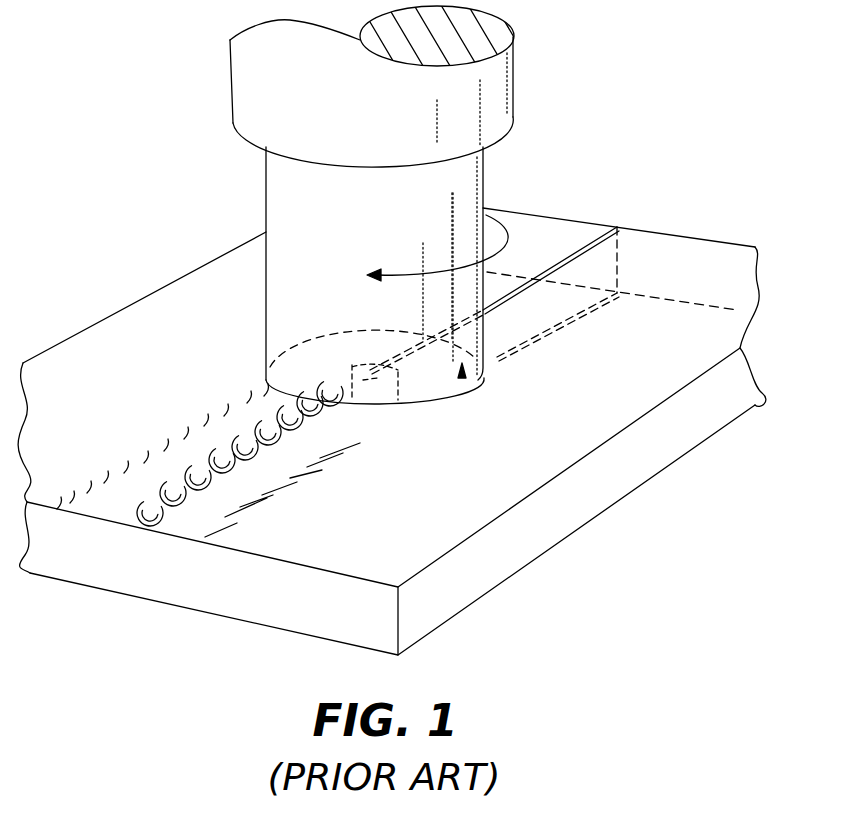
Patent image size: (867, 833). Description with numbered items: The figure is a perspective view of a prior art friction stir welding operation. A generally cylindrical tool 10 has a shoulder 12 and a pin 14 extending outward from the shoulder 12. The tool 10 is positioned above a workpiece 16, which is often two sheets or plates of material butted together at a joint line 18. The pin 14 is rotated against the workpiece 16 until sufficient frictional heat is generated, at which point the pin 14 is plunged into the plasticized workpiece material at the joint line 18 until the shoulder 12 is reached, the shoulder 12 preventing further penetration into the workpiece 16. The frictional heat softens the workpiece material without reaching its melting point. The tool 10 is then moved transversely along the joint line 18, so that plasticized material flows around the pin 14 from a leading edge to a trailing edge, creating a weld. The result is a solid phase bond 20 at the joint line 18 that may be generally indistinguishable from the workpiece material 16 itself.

The tool 10 is at (486, 189).
The shoulder 12 is at (472, 362).
The pin 14 is at (410, 395).
The workpiece 16 is at (685, 262).
The joint line 18 is at (617, 227).
The solid phase bond 20 is at (267, 386).